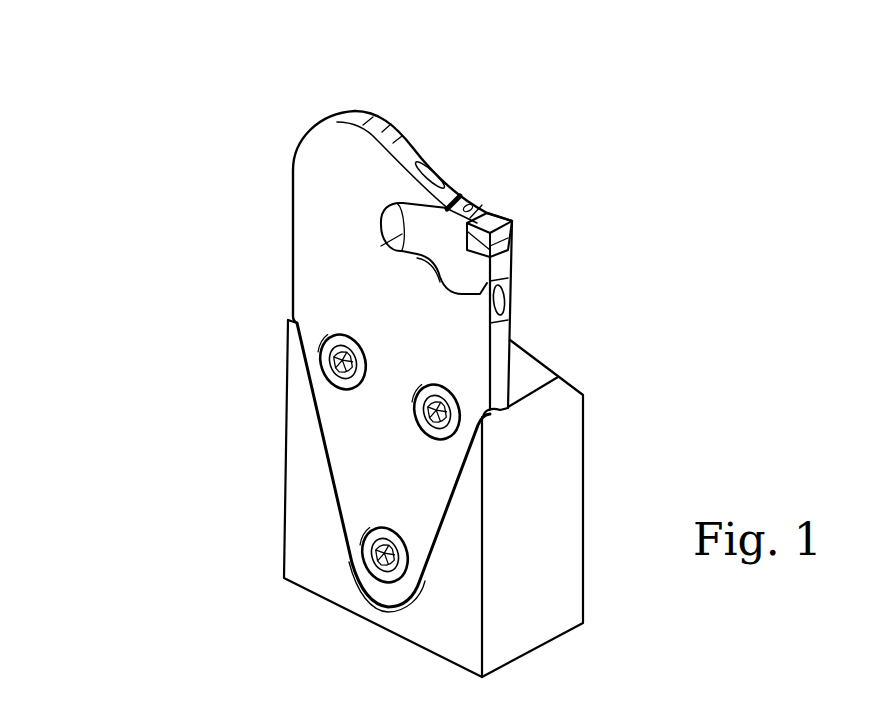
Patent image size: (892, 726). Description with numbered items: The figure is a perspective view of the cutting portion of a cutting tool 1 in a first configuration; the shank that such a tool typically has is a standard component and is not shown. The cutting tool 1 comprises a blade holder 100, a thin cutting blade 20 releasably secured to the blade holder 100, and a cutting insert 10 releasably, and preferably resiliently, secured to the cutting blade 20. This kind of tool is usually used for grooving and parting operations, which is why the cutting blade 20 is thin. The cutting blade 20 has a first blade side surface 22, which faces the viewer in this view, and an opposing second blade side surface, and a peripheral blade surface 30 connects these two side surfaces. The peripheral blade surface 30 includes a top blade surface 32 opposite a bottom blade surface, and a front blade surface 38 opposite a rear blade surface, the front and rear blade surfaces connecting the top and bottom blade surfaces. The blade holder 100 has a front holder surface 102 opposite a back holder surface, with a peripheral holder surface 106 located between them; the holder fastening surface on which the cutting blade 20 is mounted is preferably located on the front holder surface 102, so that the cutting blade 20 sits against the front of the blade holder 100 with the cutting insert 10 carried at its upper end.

The cutting tool 1 is at (113, 73).
The cutting insert 10 is at (516, 203).
The cutting blade 20 is at (311, 101).
The first blade side surface 22 is at (315, 228).
The peripheral blade surface 30 is at (374, 86).
The top blade surface 32 is at (497, 350).
The front blade surface 38 is at (415, 128).
The blade holder 100 is at (263, 420).
The front holder surface 102 is at (313, 515).
The peripheral holder surface 106 is at (558, 595).